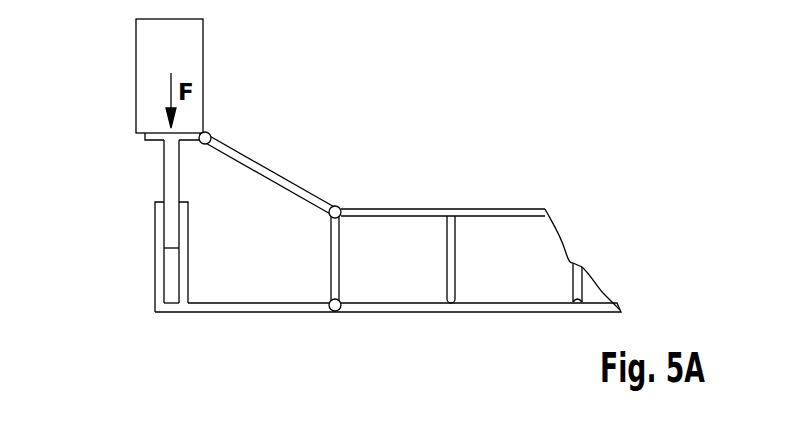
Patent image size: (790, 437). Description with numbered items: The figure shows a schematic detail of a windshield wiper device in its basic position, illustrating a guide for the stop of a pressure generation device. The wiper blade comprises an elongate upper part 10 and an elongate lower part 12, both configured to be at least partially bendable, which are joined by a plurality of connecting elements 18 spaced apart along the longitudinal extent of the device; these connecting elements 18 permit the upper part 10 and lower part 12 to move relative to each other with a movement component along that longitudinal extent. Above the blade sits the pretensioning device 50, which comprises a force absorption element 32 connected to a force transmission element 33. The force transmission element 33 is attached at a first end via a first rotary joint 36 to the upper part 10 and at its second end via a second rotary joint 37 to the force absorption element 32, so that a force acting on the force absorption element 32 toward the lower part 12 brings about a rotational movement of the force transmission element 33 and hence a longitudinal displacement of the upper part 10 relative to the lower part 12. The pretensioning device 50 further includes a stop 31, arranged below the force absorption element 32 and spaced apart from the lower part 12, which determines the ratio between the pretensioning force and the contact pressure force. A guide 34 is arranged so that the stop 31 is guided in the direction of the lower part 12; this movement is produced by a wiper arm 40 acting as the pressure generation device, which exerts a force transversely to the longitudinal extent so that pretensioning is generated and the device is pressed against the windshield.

The elongate upper part 10 is at (418, 212).
The elongate lower part 12 is at (470, 305).
The connecting elements 18 is at (445, 257).
The stop 31 is at (180, 187).
The force absorption element 32 is at (146, 141).
The force transmission element 33 is at (298, 182).
The guide 34 is at (160, 273).
The first rotary joint 36 is at (210, 133).
The second rotary joint 37 is at (338, 205).
The wiper arm 40 is at (203, 47).
The pretensioning device 50 is at (108, 125).